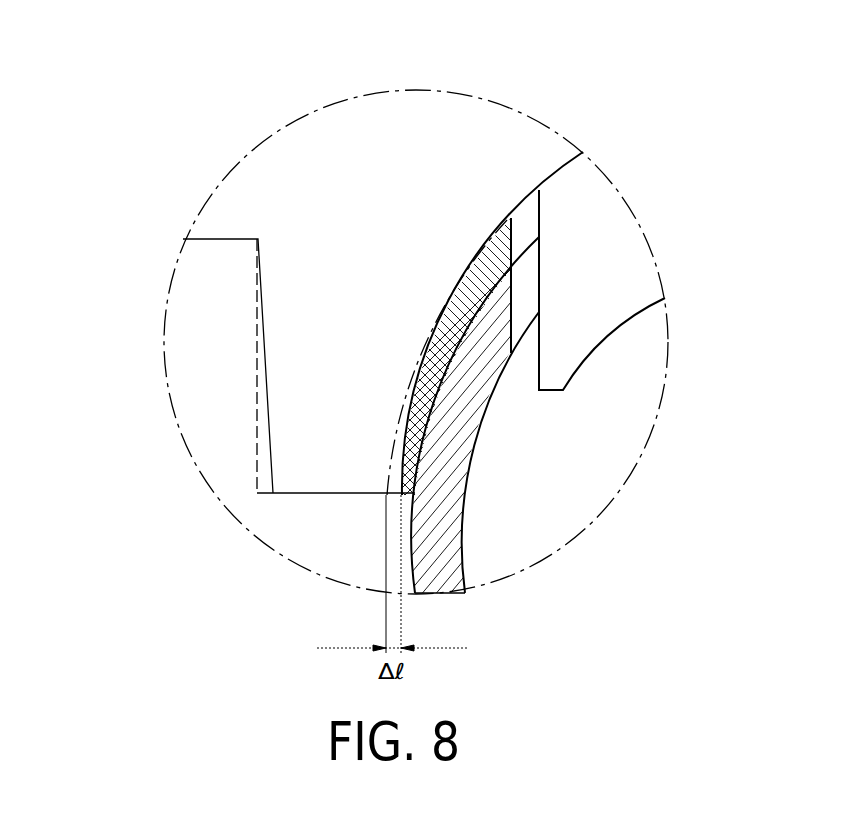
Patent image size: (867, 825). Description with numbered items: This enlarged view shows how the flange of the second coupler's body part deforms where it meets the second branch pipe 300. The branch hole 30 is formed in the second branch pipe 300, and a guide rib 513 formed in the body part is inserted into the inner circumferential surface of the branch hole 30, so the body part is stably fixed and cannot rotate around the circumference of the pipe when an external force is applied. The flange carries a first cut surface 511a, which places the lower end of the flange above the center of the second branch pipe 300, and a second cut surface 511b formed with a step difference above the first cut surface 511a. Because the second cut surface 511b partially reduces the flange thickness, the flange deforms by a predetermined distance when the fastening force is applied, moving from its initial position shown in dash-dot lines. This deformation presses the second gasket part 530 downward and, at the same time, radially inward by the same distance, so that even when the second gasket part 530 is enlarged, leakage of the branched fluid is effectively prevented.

The second gasket part 530 is at (488, 258).
The guide rib 513 is at (618, 230).
The branch hole 30 is at (512, 297).
The second branch pipe 300 is at (445, 533).
The first cut surface 511a is at (308, 495).
The second cut surface 511b is at (207, 243).